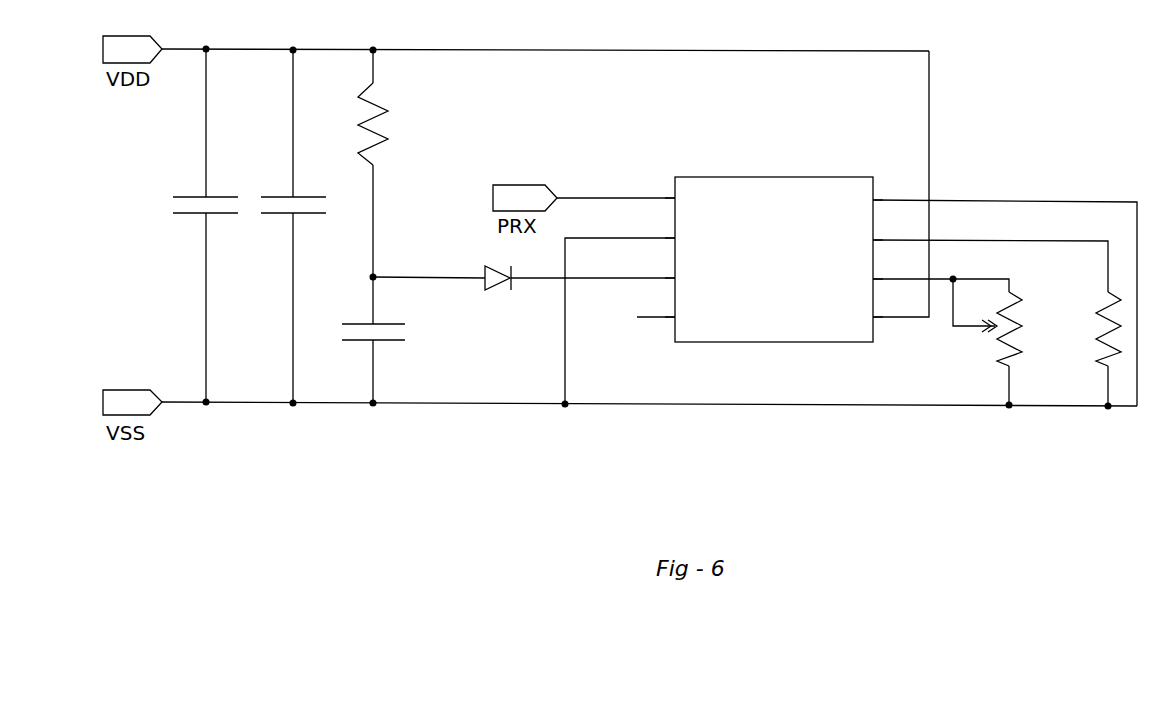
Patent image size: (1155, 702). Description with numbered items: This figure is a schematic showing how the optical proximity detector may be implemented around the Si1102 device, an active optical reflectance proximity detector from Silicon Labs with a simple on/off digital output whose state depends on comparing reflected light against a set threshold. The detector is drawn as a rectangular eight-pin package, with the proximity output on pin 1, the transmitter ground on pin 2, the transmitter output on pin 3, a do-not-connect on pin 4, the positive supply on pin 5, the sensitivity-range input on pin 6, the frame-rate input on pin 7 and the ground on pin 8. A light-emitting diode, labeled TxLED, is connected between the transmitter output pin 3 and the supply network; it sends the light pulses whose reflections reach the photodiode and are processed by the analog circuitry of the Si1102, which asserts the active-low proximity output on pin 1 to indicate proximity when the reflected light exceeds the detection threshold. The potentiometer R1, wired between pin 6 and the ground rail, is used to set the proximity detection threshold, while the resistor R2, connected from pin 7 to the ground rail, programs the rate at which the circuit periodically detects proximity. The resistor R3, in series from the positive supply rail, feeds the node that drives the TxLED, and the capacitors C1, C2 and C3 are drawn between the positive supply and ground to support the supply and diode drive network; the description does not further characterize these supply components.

The capacitor C1 (0.1 uF) C1 is at (195, 225).
The capacitor C2 (10 uF) C2 is at (284, 226).
The capacitor C3 (10 uF) C3 is at (364, 340).
The potentiometer R1 is at (947, 342).
The resistor R2 is at (997, 323).
The resistor R3 (5 Ohm) R3 is at (391, 163).
The transmit LED TxLED is at (524, 291).
The active optical reflectance proximity detector Si1102 is at (774, 273).
The pin 1 PRX 1 is at (665, 189).
The pin 2 TXGD 2 is at (665, 229).
The pin 3 TXO 3 is at (665, 269).
The pin 4 DNC 4 is at (665, 308).
The pin 5 VDD 5 is at (881, 308).
The pin 6 SREN 6 is at (881, 269).
The pin 7 FR 7 is at (881, 230).
The pin 8 VSS 8 is at (881, 190).